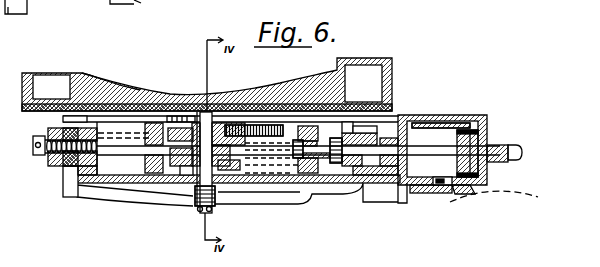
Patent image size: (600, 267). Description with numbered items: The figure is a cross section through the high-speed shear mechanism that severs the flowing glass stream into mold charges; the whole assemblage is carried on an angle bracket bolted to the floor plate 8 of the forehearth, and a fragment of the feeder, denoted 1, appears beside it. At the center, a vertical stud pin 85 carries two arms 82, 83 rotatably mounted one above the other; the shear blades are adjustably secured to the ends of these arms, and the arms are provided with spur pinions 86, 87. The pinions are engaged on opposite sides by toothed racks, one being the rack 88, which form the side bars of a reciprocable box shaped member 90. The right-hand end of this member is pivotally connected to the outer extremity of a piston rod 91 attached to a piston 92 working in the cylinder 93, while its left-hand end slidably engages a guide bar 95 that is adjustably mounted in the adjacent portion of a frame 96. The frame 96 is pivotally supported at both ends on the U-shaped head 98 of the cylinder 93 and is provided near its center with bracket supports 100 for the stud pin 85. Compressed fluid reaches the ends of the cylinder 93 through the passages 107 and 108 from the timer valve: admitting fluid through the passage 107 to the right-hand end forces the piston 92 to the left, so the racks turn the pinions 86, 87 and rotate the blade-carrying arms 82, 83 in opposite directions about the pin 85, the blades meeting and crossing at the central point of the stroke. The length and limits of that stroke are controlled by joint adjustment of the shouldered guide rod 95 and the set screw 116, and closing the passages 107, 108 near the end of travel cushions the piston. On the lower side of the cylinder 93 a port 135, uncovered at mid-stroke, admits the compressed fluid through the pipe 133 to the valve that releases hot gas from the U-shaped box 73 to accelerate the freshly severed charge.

The machine frame 1 is at (97, 80).
The floor plate 8 is at (125, 104).
The U-shaped box 73 is at (26, 86).
The arm 82 is at (175, 121).
The arm 83 is at (240, 170).
The vertical stud pin 85 is at (214, 203).
The spur pinion 86 is at (227, 125).
The spur pinion 87 is at (183, 178).
The toothed rack 88 is at (274, 125).
The box shaped member 90 is at (157, 174).
The piston rod 91 is at (334, 166).
The piston 92 is at (473, 134).
The cylinder 93 is at (467, 192).
The guide bar 95 is at (33, 146).
The frame 96 is at (90, 176).
The U-shaped head 98 is at (63, 184).
The bracket support 100 is at (198, 116).
The passage 107 is at (470, 122).
The passage 108 is at (421, 122).
The set screw 116 is at (512, 160).
The pipe 133 is at (418, 194).
The port 135 is at (455, 195).